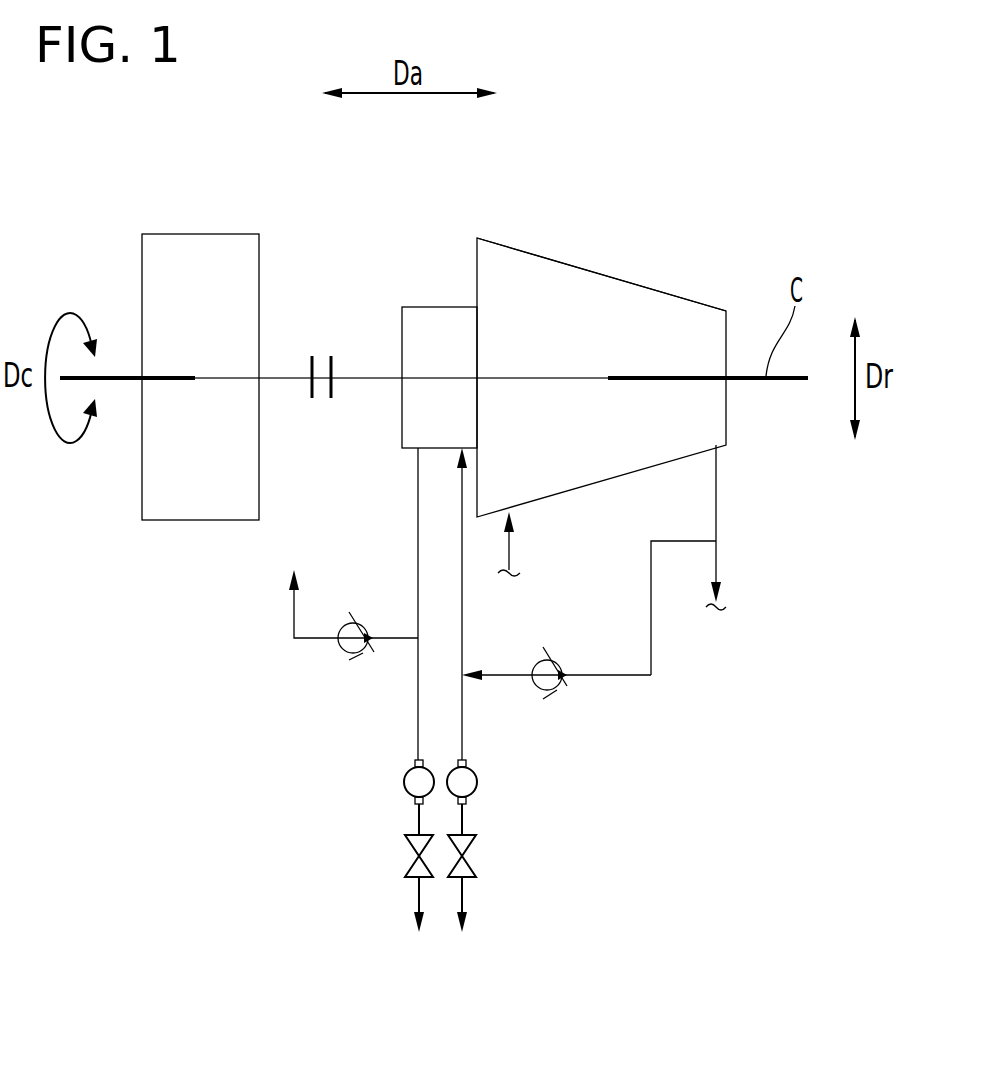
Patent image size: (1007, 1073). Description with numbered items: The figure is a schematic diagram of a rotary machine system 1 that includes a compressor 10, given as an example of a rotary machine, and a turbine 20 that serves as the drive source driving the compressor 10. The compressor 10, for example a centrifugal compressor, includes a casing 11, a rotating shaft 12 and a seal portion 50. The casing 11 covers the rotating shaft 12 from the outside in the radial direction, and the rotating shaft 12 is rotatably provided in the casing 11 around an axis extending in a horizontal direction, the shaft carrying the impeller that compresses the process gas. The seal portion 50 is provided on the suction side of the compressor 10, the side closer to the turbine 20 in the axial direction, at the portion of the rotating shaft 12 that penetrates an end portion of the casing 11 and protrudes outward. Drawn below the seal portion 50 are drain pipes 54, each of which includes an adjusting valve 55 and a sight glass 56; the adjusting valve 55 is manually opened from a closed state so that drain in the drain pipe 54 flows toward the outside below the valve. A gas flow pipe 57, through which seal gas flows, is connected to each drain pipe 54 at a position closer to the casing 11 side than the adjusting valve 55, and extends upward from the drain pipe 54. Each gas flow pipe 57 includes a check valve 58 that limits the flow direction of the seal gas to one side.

The rotary machine system 1 is at (771, 190).
The compressor 10 is at (658, 268).
The casing 11 is at (541, 282).
The rotating shaft 12 is at (671, 379).
The turbine 20 is at (198, 222).
The seal portion 50 is at (424, 287).
The drain pipe 54 is at (462, 507).
The adjusting valve 55 is at (405, 858).
The sight glass 56 is at (402, 781).
The gas flow pipe 57 is at (294, 612).
The check valve 58 is at (348, 660).